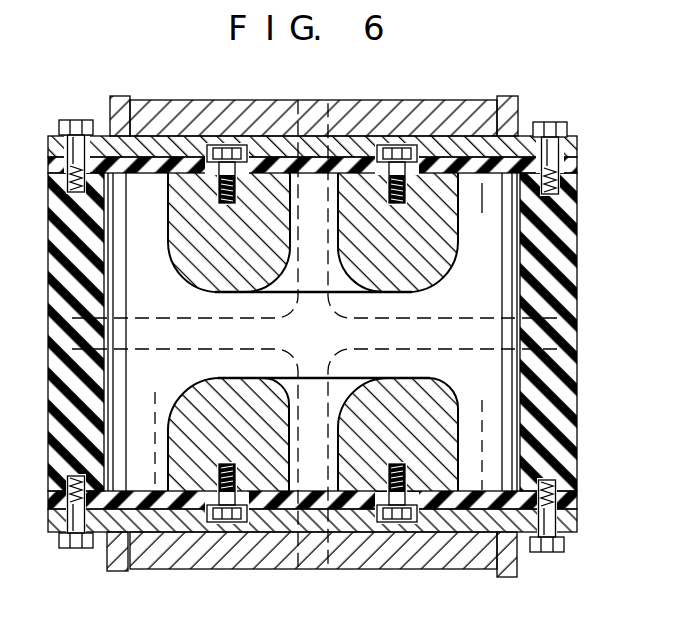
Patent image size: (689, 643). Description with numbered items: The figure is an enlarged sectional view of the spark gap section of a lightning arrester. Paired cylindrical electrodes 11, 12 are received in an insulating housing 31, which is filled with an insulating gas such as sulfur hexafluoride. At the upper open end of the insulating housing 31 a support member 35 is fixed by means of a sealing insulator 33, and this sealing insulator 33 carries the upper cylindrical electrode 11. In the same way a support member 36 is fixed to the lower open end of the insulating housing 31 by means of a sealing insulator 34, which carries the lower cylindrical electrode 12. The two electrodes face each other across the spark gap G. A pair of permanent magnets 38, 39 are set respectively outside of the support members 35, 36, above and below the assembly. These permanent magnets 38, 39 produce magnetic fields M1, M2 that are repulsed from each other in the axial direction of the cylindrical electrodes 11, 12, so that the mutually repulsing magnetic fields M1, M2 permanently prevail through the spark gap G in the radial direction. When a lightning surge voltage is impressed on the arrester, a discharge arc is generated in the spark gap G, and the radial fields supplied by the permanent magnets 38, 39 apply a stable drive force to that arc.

The permanent magnet 38 is at (458, 112).
The support member 35 is at (568, 145).
The sealing insulator 33 is at (563, 168).
The cylindrical electrode 11 is at (443, 237).
The insulating housing 31 is at (568, 343).
The cylindrical electrode 12 is at (443, 458).
The sealing insulator 34 is at (573, 507).
The support member 36 is at (567, 527).
The permanent magnet 39 is at (452, 556).
The spark gap G is at (165, 335).
The magnetic field M1 is at (314, 209).
The magnetic field M2 is at (314, 459).